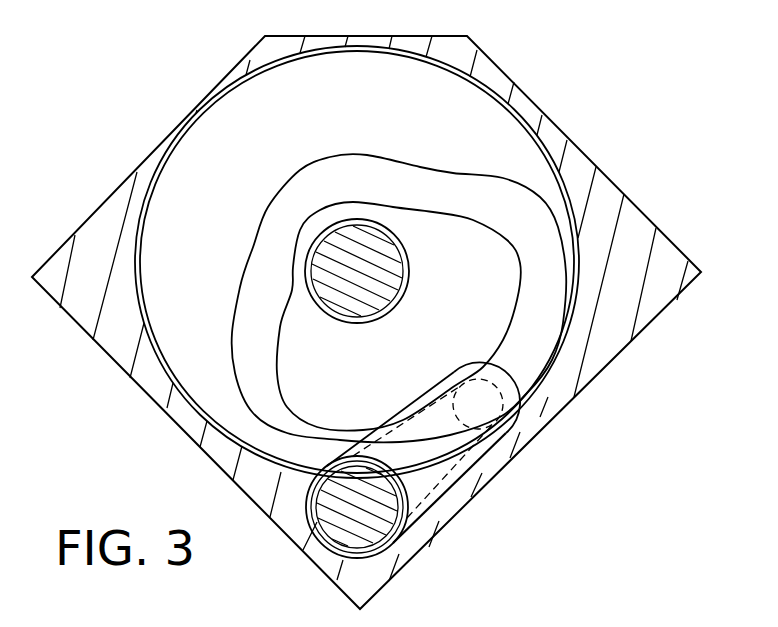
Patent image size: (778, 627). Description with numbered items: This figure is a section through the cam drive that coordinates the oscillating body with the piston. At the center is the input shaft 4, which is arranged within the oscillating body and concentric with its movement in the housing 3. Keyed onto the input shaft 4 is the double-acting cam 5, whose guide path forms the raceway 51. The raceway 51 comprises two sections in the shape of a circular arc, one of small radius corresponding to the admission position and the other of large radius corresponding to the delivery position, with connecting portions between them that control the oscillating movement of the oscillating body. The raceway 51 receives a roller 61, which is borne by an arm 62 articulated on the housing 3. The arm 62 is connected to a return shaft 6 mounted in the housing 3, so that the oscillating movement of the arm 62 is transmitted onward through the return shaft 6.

The housing 3 is at (606, 202).
The input shaft 4 is at (370, 282).
The double-acting cam 5 is at (479, 110).
The raceway 51 is at (492, 188).
The return shaft 6 is at (398, 522).
The roller 61 is at (520, 440).
The arm 62 is at (470, 486).